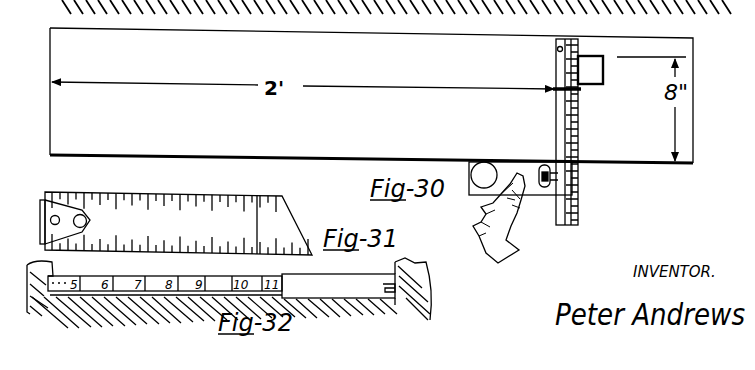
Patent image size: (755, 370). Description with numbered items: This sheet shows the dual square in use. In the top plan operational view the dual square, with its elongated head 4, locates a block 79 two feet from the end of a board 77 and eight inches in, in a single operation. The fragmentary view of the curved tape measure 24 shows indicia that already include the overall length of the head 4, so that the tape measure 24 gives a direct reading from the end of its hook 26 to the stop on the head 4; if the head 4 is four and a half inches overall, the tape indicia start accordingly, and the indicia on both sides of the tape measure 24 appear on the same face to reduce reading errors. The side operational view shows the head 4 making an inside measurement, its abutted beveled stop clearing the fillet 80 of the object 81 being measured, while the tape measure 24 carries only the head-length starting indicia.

In FIG. 30, the board 77 is at (288, 62).
In FIG. 30, the block 79 is at (607, 77).
In FIG. 31, the tape measure 24 is at (178, 196).
In FIG. 31, the hook 26 is at (68, 214).
In FIG. 32, the head 4 is at (372, 293).
In FIG. 32, the fillet 80 is at (408, 300).
In FIG. 32, the object 81 is at (410, 282).